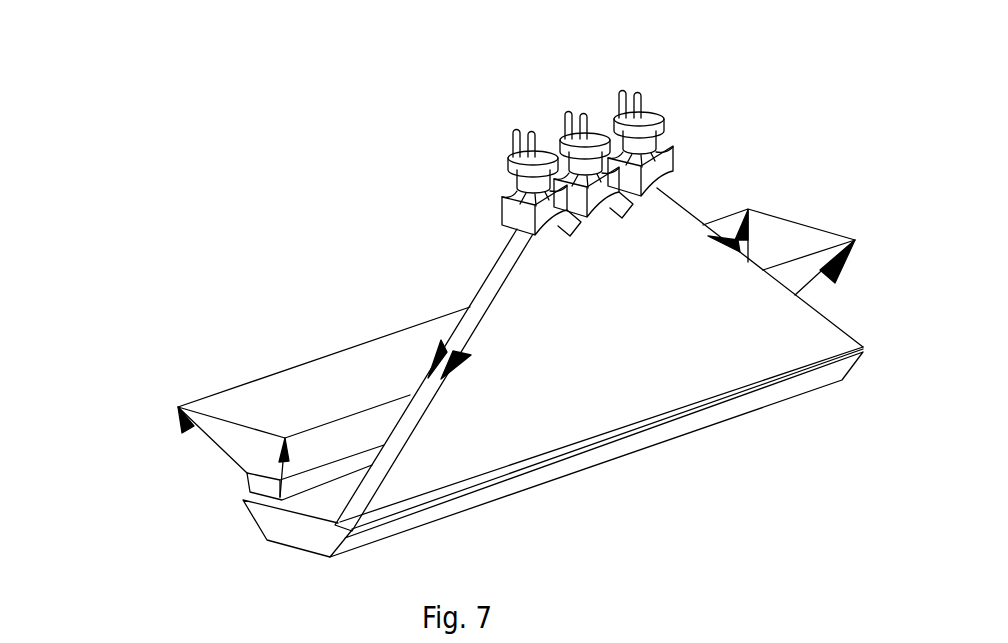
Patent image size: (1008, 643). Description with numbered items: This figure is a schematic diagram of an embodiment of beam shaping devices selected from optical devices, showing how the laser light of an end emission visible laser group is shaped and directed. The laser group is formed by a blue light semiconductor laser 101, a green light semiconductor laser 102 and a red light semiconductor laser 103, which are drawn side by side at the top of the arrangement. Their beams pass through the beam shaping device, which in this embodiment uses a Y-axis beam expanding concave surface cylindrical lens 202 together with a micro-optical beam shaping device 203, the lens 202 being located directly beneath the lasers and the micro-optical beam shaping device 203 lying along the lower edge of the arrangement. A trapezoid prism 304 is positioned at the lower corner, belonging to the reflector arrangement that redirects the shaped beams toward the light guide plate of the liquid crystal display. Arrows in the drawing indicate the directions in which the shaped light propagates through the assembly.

The blue light semiconductor laser 101 is at (514, 150).
The green light semiconductor laser 102 is at (561, 118).
The red light semiconductor laser 103 is at (614, 104).
The beam expanding concave surface cylindrical lens 202 is at (500, 222).
The micro-optical beam shaping device 203 is at (244, 486).
The trapezoid prism 304 is at (291, 528).